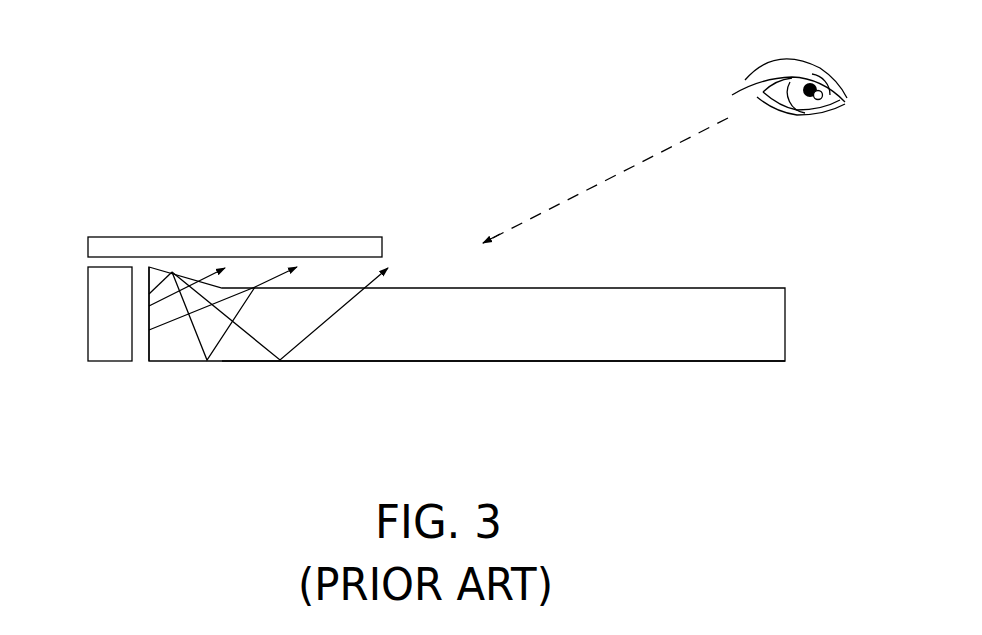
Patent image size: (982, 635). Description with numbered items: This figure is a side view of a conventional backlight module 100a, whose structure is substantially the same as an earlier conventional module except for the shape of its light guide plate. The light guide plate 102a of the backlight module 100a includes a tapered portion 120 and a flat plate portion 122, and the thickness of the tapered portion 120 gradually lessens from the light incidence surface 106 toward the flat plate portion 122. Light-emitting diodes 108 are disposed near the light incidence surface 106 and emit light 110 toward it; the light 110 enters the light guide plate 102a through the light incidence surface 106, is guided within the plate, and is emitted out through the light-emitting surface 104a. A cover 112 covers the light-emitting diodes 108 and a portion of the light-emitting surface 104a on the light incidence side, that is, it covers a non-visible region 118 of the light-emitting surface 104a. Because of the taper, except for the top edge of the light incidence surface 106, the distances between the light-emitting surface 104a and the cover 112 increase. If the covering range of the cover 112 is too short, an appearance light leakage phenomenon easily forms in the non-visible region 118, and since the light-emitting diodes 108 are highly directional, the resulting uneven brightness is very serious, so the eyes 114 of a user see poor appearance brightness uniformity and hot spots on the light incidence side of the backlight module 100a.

The backlight module 100a is at (145, 197).
The light guide plate 102a is at (772, 320).
The light-emitting surface 104a is at (482, 303).
The light incidence surface 106 is at (148, 350).
The light-emitting diodes 108 is at (97, 312).
The light 110 is at (340, 312).
The cover 112 is at (328, 248).
The eyes 114 is at (798, 62).
The non-visible region 118 is at (247, 264).
The tapered portion 120 is at (175, 350).
The flat plate portion 122 is at (495, 350).